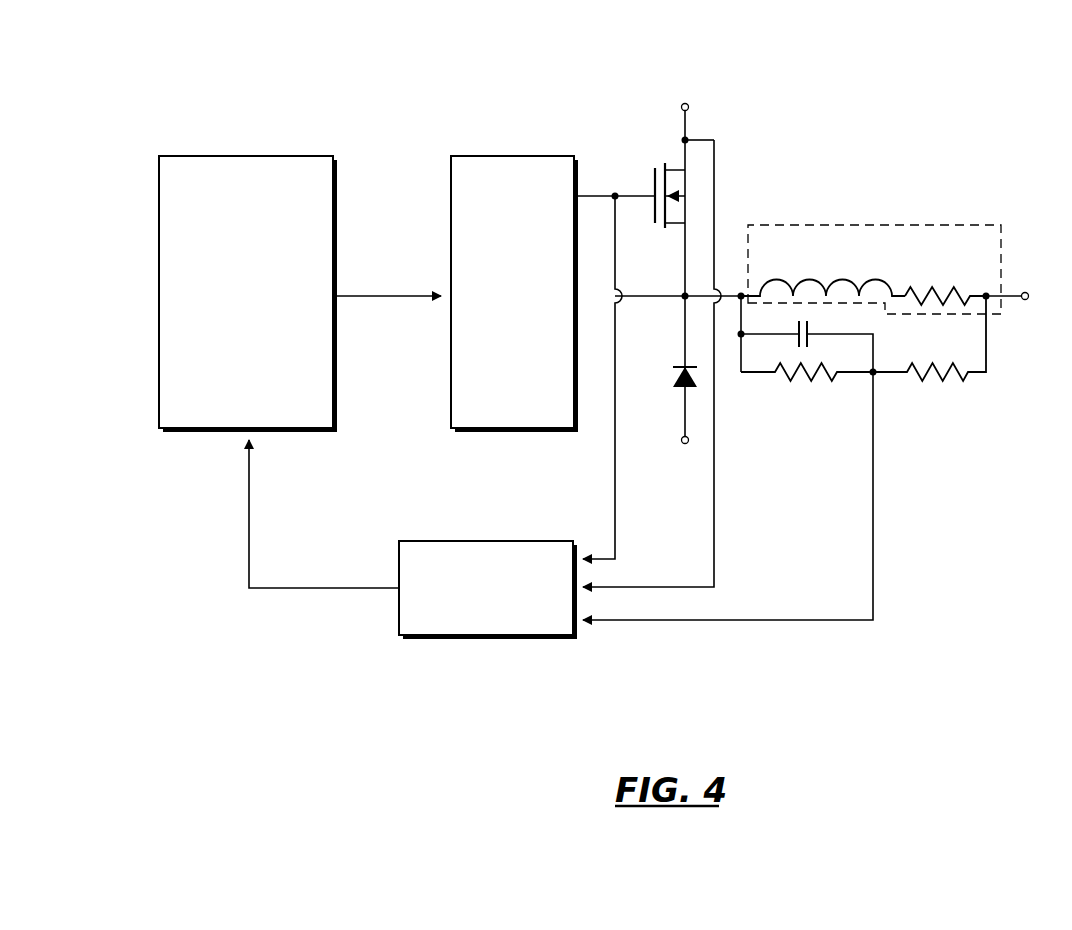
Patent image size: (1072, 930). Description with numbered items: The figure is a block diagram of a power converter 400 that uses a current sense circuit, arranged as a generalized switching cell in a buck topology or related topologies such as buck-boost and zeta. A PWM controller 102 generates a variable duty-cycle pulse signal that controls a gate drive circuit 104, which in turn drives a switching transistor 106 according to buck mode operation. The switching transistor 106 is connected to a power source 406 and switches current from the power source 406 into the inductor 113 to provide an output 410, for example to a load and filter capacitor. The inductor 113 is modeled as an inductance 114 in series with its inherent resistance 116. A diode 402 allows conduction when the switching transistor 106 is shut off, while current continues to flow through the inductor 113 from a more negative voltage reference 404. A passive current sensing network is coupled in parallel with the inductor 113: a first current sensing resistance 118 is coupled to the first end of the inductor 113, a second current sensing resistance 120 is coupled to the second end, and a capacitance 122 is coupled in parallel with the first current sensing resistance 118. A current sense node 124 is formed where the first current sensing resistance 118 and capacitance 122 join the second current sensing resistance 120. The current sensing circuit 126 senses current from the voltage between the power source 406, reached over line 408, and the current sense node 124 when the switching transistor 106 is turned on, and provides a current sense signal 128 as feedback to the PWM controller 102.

The power converter 400 is at (1041, 51).
The PWM controller 102 is at (222, 156).
The gate drive circuit 104 is at (509, 156).
The switching transistor 106 is at (655, 178).
The inductor 113 is at (935, 225).
The inductance 114 is at (845, 276).
The inherent resistance 116 is at (925, 289).
The first current sensing resistance 118 is at (790, 377).
The second current sensing resistance 120 is at (935, 378).
The capacitance 122 is at (810, 334).
The current sense node 124 is at (873, 550).
The current sensing circuit 126 is at (490, 541).
The current sense signal 128 is at (305, 588).
The diode 402 is at (680, 381).
The more negative voltage reference 404 is at (683, 437).
The power source 406 is at (688, 121).
The line 408 is at (714, 490).
The output 410 is at (1003, 296).